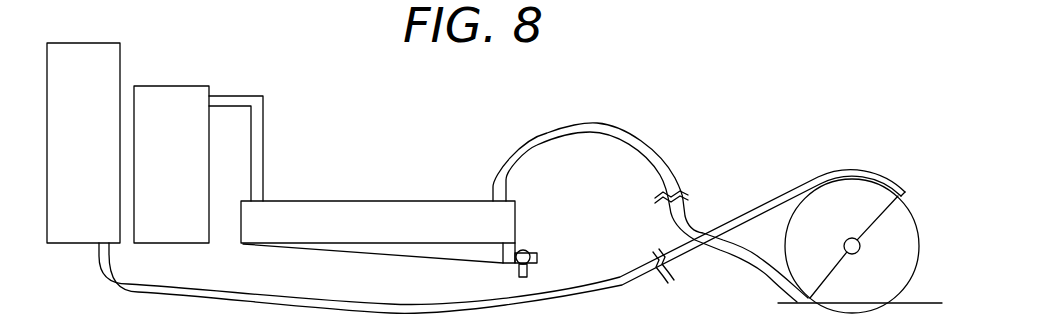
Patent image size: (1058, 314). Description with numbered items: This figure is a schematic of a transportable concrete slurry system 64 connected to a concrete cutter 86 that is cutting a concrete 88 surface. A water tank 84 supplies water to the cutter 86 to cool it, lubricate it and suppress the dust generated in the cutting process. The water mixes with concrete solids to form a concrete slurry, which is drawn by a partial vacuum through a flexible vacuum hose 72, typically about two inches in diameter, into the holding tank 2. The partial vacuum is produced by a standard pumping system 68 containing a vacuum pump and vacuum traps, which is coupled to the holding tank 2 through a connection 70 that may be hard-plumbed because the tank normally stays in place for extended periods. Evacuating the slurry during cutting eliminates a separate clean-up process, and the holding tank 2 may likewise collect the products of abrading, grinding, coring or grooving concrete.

The holding tank 2 is at (313, 178).
The transportable concrete slurry system 64 is at (404, 104).
The pumping system 68 is at (191, 191).
The connection 70 is at (240, 96).
The flexible vacuum hose 72 is at (584, 124).
The water tank 84 is at (97, 141).
The concrete cutter 86 is at (913, 220).
The concrete surface 88 is at (926, 302).